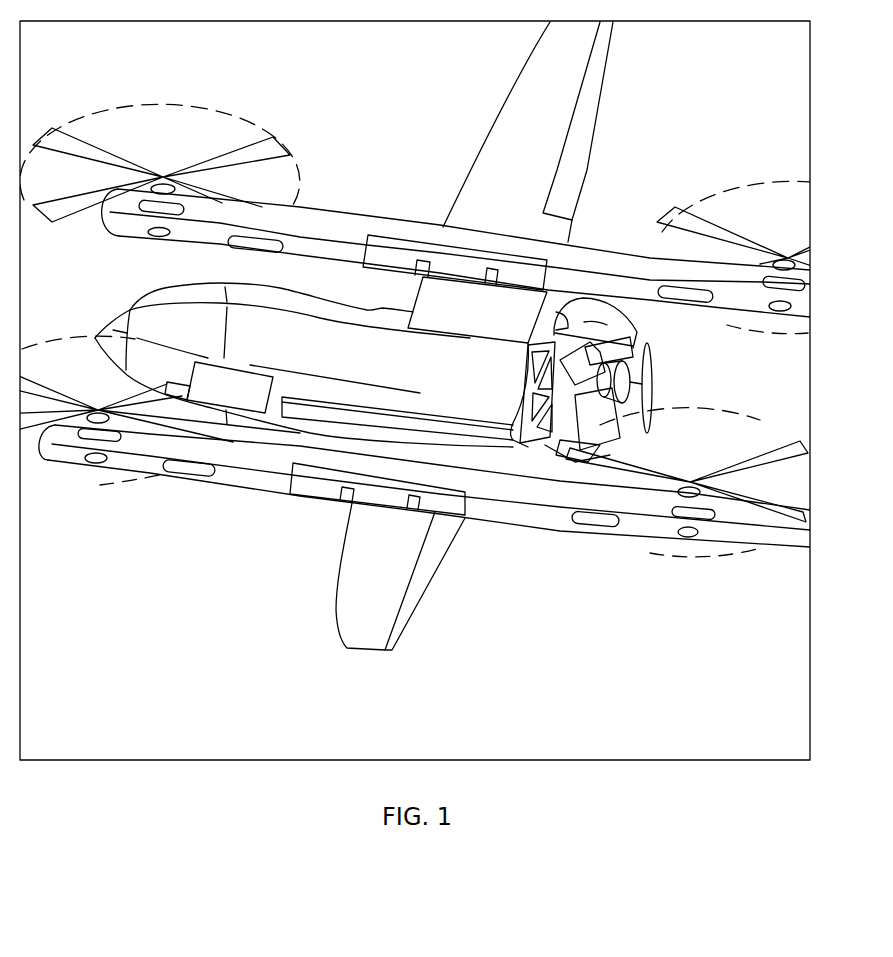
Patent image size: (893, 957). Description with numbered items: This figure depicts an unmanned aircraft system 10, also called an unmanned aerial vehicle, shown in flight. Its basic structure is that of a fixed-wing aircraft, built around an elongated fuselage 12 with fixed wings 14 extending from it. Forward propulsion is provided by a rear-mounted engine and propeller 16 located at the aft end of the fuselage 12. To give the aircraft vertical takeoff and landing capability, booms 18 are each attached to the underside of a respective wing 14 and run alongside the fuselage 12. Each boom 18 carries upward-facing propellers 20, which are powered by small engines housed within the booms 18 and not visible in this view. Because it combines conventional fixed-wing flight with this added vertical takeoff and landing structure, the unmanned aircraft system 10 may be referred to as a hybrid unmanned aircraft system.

The unmanned aircraft system 10 is at (330, 82).
The fuselage 12 is at (146, 295).
The fixed wings 14 is at (506, 87).
The engine and propeller 16 is at (678, 377).
The booms 18 is at (412, 218).
The upward-facing propellers 20 is at (253, 140).